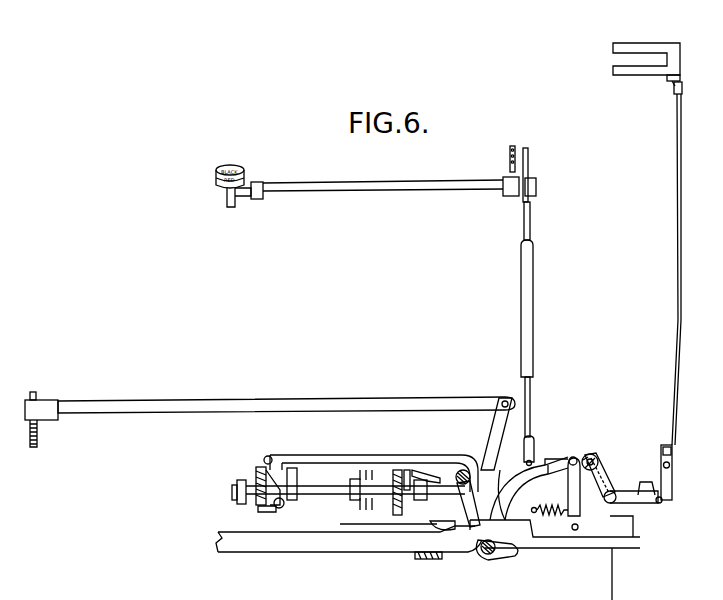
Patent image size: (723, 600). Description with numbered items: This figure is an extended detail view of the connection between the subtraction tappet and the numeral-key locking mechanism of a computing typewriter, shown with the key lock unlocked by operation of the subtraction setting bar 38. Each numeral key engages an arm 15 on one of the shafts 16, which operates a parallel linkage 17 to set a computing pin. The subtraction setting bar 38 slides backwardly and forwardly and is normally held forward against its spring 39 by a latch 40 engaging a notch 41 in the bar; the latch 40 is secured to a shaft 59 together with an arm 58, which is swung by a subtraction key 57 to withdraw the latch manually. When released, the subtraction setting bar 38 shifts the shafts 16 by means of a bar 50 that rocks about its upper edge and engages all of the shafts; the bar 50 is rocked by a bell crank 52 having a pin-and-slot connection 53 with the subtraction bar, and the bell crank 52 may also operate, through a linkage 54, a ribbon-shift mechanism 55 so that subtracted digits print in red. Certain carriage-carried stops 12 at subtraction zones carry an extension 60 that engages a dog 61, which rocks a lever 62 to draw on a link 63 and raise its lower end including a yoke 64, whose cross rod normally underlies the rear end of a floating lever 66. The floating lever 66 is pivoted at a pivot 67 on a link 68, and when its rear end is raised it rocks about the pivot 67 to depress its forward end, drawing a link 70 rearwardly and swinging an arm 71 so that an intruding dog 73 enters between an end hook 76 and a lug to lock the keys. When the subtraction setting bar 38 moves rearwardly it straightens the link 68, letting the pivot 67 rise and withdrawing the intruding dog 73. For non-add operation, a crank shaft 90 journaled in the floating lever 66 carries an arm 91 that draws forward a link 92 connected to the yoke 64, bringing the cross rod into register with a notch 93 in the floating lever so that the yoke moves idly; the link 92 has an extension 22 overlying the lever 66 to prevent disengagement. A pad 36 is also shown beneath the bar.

The carriage-carried stops 12 is at (624, 75).
The arm 15 is at (232, 493).
The shafts 16 is at (334, 498).
The parallel linkage 17 is at (297, 478).
The lug 22 is at (646, 482).
The pad 36 is at (430, 560).
The subtraction setting bar 38 is at (354, 553).
The spring 39 is at (540, 520).
The latch 40 is at (510, 551).
The notch 41 is at (537, 538).
The bar 50 is at (421, 470).
The bell crank 52 is at (466, 500).
The pin-and-slot connection 53 is at (452, 530).
The linkage 54 is at (535, 302).
The ribbon-shift mechanism 55 is at (521, 168).
The subtraction key 57 is at (68, 392).
The arm 58 is at (497, 431).
The shaft 59 is at (482, 556).
The extension 60 is at (681, 77).
The dog 61 is at (671, 82).
The lever 62 is at (683, 88).
The link 63 is at (677, 246).
The yoke 64 is at (673, 472).
The floating lever 66 is at (584, 506).
The pivot 67 is at (573, 457).
The link 68 is at (566, 501).
The link 70 is at (356, 461).
The arm 71 is at (266, 457).
The intruding dog 73 is at (260, 511).
The end hook 76 is at (256, 480).
The crank shaft 90 is at (597, 459).
The arm 91 is at (606, 473).
The link 92 is at (613, 492).
The notch 93 is at (659, 504).